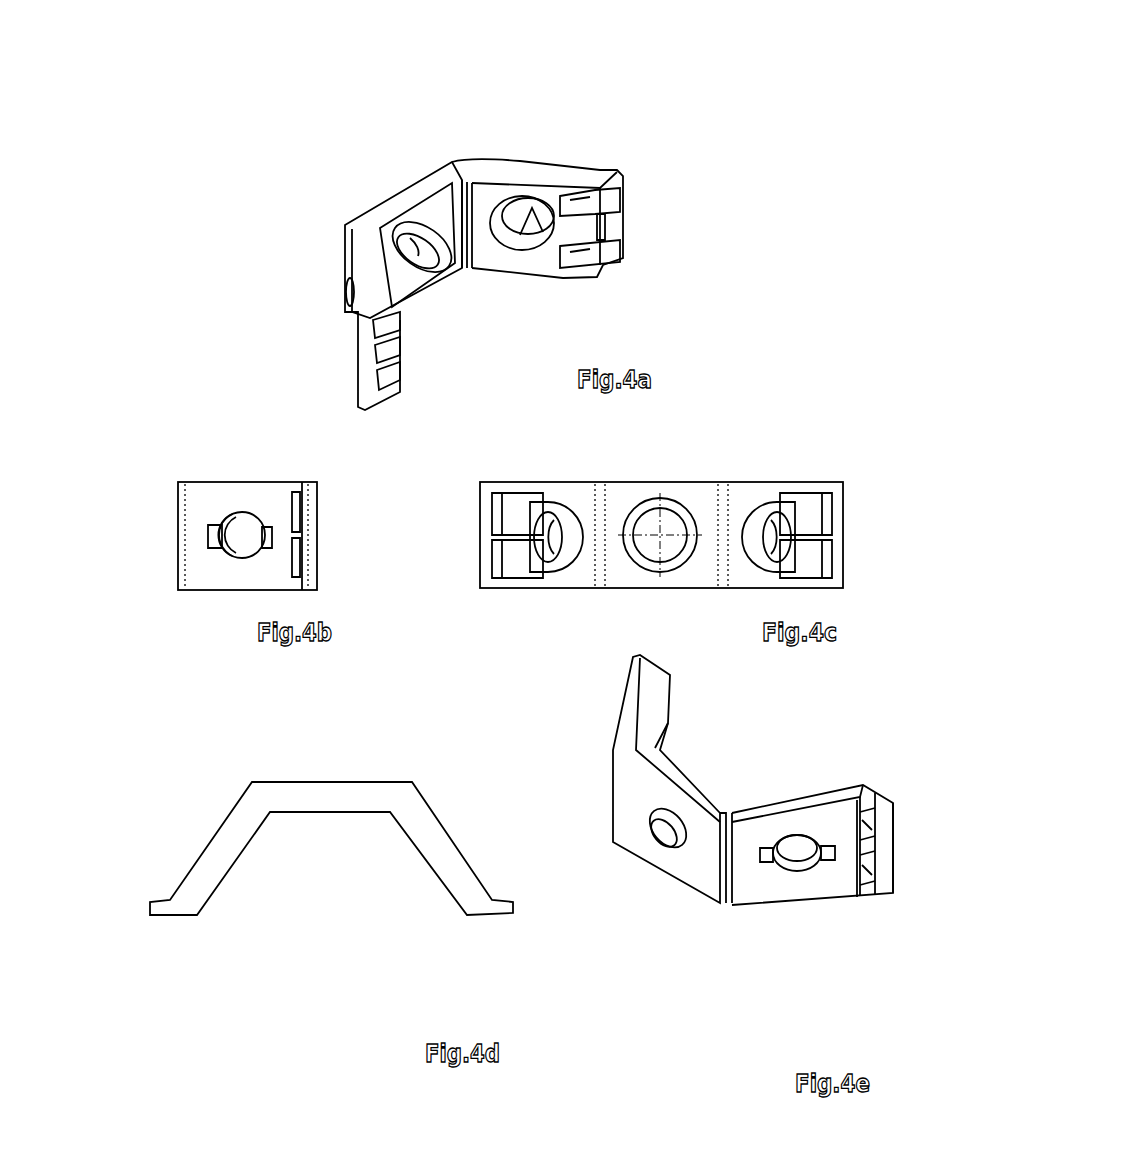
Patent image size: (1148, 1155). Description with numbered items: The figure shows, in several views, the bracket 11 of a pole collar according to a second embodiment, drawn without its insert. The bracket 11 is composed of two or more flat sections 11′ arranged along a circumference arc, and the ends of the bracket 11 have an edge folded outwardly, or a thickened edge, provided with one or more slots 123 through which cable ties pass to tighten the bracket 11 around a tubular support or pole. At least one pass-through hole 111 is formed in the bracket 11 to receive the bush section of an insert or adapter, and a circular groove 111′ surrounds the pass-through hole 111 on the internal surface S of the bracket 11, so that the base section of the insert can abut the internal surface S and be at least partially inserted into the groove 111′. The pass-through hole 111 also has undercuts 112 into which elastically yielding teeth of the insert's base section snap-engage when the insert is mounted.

In FIG. 4E, the bracket 11 is at (635, 727).
In FIG. 4A, the flat section 11′ is at (408, 202).
In FIG. 4B, the flat section 11′ is at (198, 508).
In FIG. 4D, the flat section 11′ is at (212, 865).
In FIG. 4A, the pass-through hole 111 is at (440, 217).
In FIG. 4B, the pass-through hole 111 is at (210, 548).
In FIG. 4C, the pass-through hole 111 is at (563, 498).
In FIG. 4E, the pass-through hole 111 is at (793, 833).
In FIG. 4C, the circular groove 111′ is at (677, 508).
In FIG. 4E, the undercut 112 is at (717, 900).
In FIG. 4A, the slot 123 is at (598, 214).
In FIG. 4B, the slot 123 is at (292, 512).
In FIG. 4C, the slot 123 is at (495, 520).
In FIG. 4E, the slot 123 is at (853, 827).
In FIG. 4A, the internal surface S is at (448, 263).